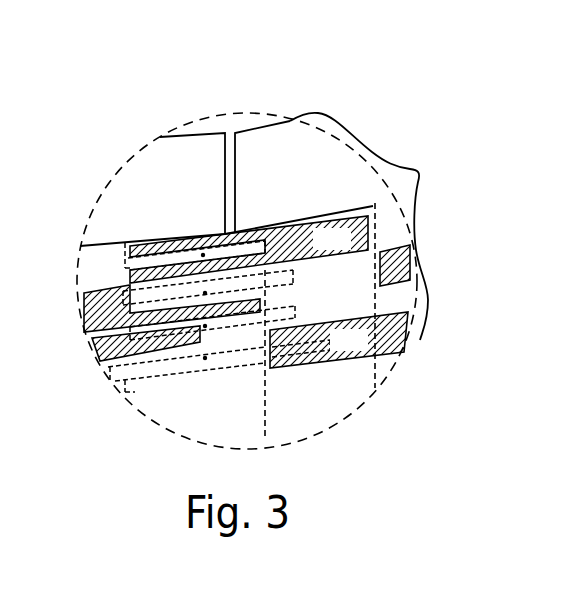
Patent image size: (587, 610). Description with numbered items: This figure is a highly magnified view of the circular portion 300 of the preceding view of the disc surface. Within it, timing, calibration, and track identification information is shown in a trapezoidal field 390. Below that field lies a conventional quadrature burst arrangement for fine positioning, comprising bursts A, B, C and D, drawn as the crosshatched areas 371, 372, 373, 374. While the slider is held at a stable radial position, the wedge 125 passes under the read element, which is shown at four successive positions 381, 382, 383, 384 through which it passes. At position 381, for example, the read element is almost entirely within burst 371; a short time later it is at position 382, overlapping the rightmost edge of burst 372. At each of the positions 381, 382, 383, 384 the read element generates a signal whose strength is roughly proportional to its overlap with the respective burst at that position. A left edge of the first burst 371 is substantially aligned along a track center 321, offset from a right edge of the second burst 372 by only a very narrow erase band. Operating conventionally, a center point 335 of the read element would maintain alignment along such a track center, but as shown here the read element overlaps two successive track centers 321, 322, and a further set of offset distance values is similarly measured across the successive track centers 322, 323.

The circular portion 300 is at (191, 66).
The wedge 125 is at (340, 226).
The trapezoidal field 390 is at (182, 198).
The first read element position 381 is at (124, 264).
The center point of read element 335 is at (222, 248).
The burst A 371 is at (348, 250).
The second read element position 382 is at (297, 278).
The third read element position 383 is at (297, 311).
The fourth read element position 384 is at (185, 363).
The burst B 372 is at (122, 292).
The burst C 373 is at (98, 348).
The burst D 374 is at (364, 351).
The track center 321 is at (128, 383).
The track center 322 is at (267, 380).
The track center 323 is at (375, 366).